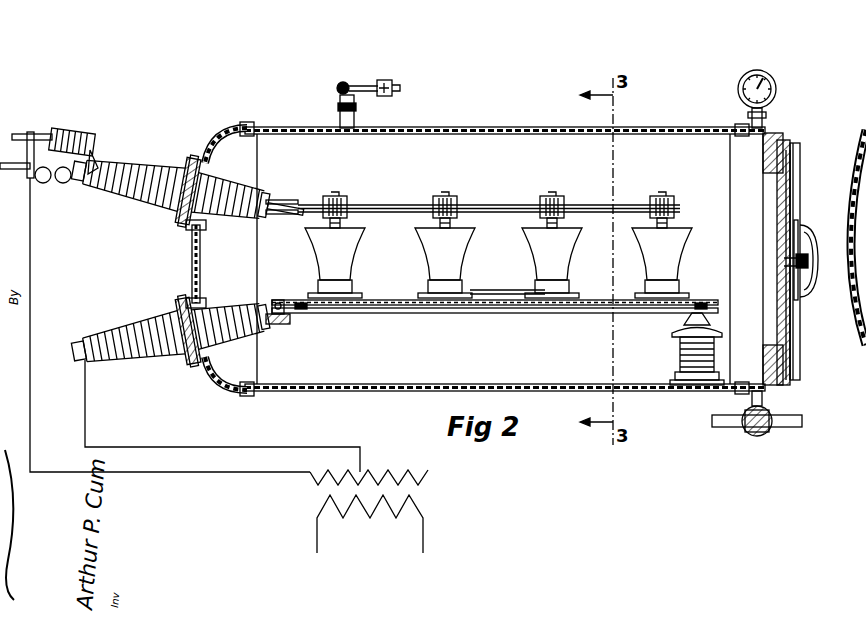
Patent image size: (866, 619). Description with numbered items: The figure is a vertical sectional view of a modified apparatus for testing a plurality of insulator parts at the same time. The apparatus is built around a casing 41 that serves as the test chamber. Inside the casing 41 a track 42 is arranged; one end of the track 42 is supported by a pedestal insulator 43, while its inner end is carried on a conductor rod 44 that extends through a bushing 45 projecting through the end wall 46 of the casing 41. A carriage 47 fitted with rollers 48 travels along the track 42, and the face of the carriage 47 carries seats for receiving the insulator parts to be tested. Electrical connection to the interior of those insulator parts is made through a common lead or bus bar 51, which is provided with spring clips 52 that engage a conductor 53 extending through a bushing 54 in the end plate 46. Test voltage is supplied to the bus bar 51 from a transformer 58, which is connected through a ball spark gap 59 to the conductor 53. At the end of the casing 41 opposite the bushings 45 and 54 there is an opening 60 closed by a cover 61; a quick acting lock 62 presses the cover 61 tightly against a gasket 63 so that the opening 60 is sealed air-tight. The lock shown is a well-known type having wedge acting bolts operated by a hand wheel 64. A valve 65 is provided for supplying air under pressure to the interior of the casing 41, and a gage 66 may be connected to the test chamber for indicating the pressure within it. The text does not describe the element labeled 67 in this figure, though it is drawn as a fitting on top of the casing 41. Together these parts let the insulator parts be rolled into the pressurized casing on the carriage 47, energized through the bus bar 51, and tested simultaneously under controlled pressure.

The casing 41 is at (470, 128).
The track 42 is at (430, 313).
The pedestal insulator 43 is at (676, 350).
The conductor rod 44 is at (272, 326).
The bushing 45 is at (160, 340).
The end wall 46 is at (192, 245).
The carriage 47 is at (486, 292).
The rollers 48 is at (310, 308).
The bus bar 51 is at (490, 190).
The spring clips 52 is at (280, 203).
The conductor 53 is at (268, 206).
The bushing 54 is at (140, 170).
The transformer 58 is at (415, 493).
The ball spark gap 59 is at (47, 183).
The opening 60 is at (788, 190).
The cover 61 is at (790, 212).
The quick acting lock 62 is at (800, 332).
The gasket 63 is at (775, 160).
The hand wheel 64 is at (806, 235).
The valve 65 is at (770, 434).
The gage 66 is at (770, 74).
The valve 67 is at (352, 82).